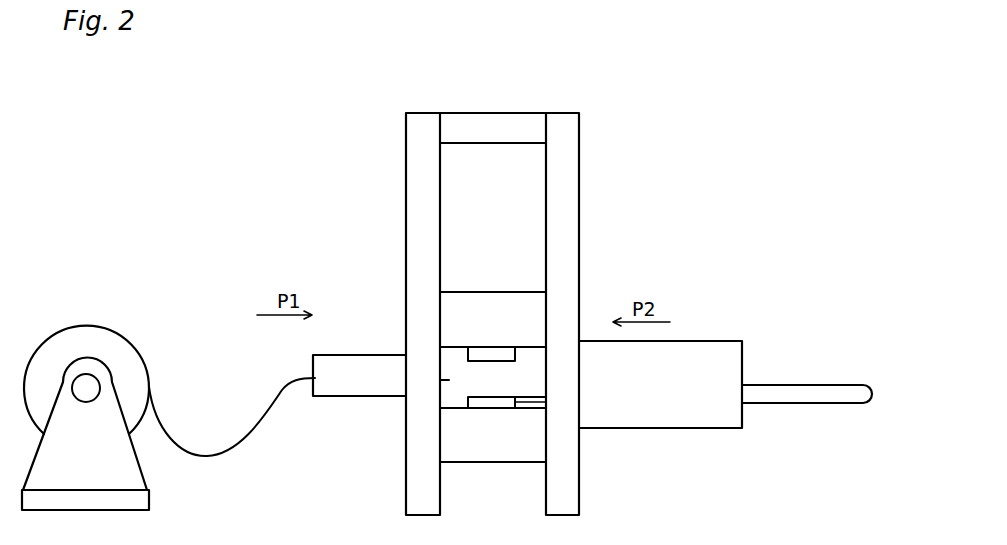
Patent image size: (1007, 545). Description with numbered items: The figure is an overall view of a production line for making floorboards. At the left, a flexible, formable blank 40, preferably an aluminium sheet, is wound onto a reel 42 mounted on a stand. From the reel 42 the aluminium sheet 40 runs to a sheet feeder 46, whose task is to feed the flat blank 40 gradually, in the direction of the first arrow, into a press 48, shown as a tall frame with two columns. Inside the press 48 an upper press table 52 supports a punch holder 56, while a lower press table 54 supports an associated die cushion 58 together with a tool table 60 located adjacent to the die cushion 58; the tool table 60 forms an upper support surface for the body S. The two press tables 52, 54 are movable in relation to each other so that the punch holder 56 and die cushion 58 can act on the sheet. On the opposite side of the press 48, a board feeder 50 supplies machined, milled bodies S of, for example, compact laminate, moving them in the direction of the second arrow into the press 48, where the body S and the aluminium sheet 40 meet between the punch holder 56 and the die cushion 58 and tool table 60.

The blank 40 is at (207, 454).
The reel 42 is at (88, 328).
The sheet feeder 46 is at (335, 355).
The press 48 is at (470, 113).
The board feeder 50 is at (712, 341).
The upper press table 52 is at (492, 292).
The lower press table 54 is at (482, 463).
The punch holder 56 is at (488, 363).
The die cushion 58 is at (492, 394).
The tool table 60 is at (533, 410).
The body S is at (767, 385).